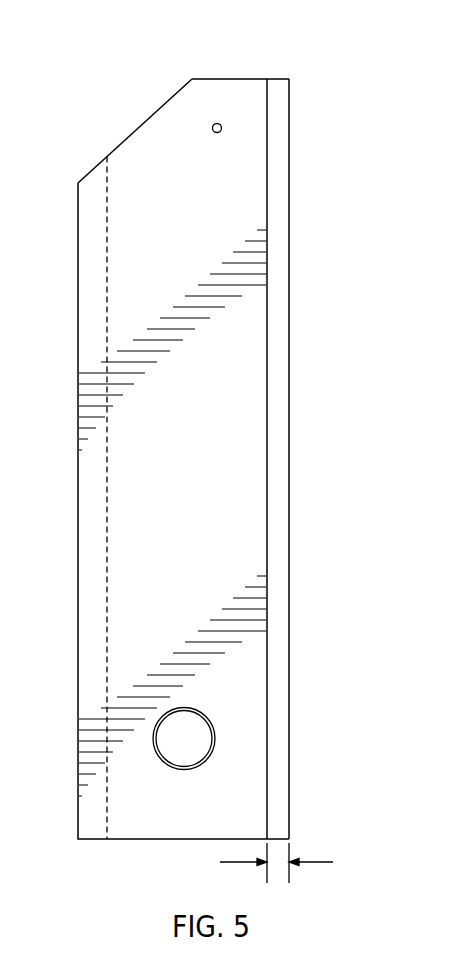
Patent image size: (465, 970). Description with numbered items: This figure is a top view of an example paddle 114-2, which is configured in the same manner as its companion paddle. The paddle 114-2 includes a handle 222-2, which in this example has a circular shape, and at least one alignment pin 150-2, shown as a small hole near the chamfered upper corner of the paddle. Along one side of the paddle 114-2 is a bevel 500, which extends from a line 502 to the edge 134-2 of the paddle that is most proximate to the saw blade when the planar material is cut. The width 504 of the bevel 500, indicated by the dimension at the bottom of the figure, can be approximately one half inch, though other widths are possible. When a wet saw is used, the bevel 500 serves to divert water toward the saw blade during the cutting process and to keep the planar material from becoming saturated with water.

The bevel 500 is at (277, 373).
The line 502 is at (268, 80).
The width 504 is at (299, 863).
The paddle 114-2 is at (140, 152).
The edge 134-2 is at (290, 508).
The alignment pin 150-2 is at (218, 123).
The handle 222-2 is at (184, 738).